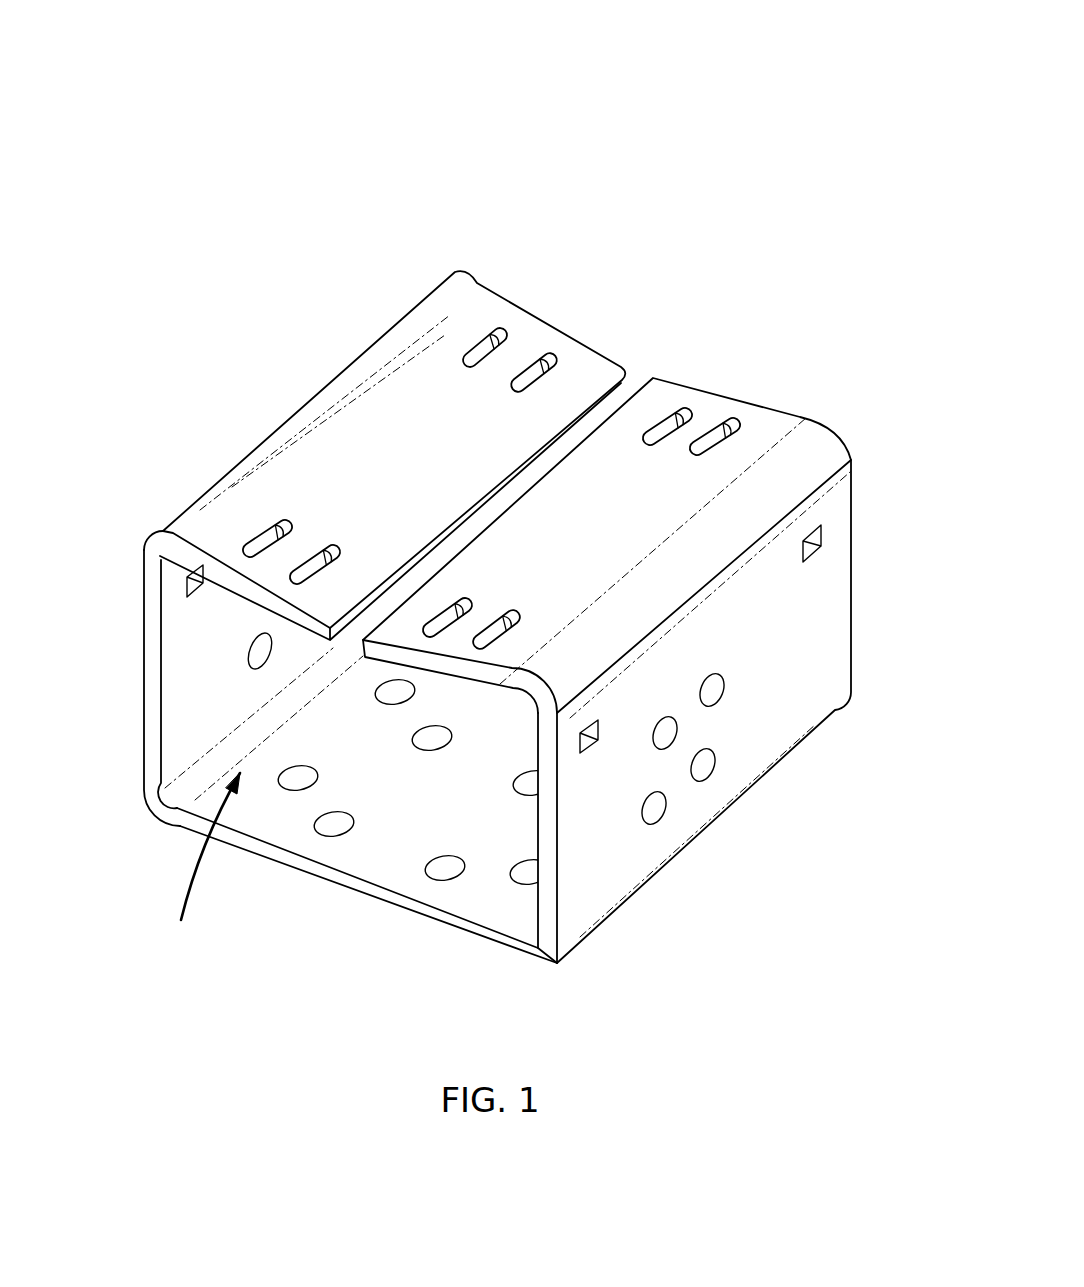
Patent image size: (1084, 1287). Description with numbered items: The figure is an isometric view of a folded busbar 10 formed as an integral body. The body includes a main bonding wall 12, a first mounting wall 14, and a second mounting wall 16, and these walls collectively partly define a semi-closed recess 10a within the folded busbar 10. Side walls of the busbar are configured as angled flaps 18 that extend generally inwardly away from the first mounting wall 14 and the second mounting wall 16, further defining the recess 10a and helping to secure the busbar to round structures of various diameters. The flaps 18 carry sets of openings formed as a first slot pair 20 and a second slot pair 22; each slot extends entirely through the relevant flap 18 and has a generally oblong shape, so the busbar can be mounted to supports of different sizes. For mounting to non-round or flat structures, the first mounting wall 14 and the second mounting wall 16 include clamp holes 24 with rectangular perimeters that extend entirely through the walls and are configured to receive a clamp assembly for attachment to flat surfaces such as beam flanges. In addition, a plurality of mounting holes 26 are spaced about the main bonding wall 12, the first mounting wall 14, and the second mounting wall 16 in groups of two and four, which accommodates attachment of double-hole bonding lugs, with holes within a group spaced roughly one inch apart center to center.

The folded busbar 10 is at (199, 178).
The semi-closed recess 10a is at (181, 920).
The main bonding wall 12 is at (385, 850).
The first mounting wall 14 is at (788, 693).
The second mounting wall 16 is at (188, 668).
The flaps 18 is at (358, 423).
The first slot pair 20 is at (460, 600).
The second slot pair 22 is at (498, 625).
The clamp holes 24 is at (187, 580).
The mounting holes 26 is at (250, 652).